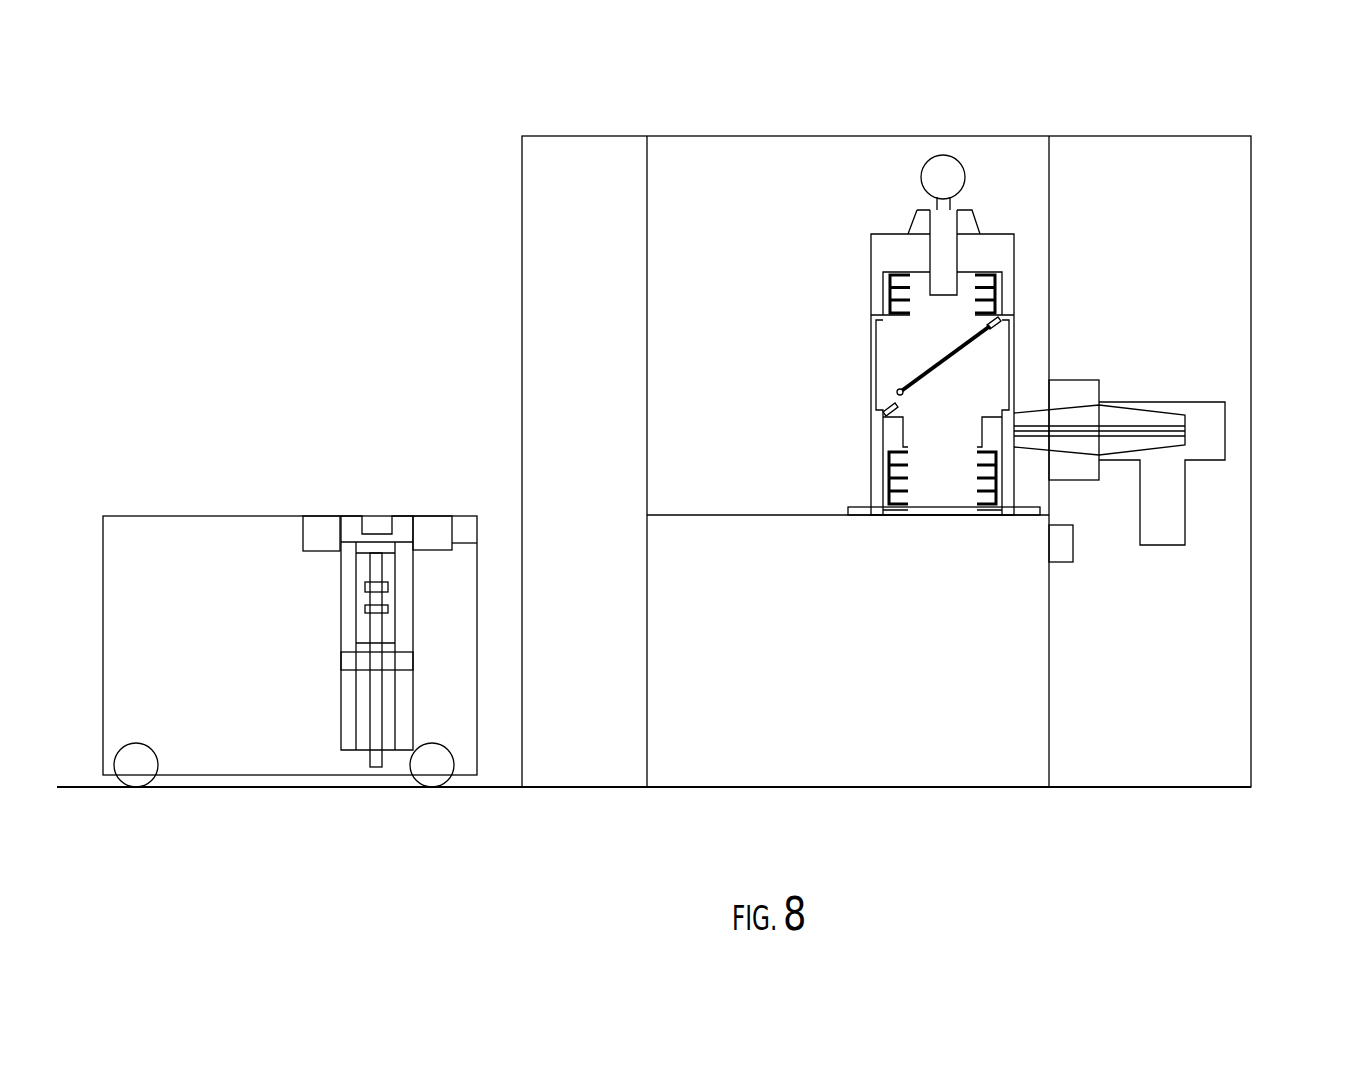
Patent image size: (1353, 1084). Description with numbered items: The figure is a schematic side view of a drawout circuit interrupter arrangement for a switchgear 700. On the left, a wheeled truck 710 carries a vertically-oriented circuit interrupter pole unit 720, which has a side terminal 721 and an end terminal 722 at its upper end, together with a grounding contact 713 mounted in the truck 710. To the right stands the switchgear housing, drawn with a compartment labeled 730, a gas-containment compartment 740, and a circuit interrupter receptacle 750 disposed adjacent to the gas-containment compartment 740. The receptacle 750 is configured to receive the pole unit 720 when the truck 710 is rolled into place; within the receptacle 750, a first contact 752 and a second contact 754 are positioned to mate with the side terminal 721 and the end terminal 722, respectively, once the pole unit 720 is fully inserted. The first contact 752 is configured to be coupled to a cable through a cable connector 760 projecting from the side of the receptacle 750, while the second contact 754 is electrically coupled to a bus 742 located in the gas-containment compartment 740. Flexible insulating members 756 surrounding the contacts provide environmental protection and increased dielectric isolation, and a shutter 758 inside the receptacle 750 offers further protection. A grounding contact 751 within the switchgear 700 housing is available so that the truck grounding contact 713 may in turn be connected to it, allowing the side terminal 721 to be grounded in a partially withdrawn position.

The switchgear 700 is at (1316, 145).
The truck 710 is at (237, 517).
The grounding contact 713 is at (317, 540).
The circuit interrupter pole unit 720 is at (345, 633).
The side terminal 721 is at (418, 663).
The end terminal 722 is at (403, 517).
The processing station housing 730 is at (1143, 137).
The gas-containment compartment 740 is at (1007, 155).
The bus 742 is at (958, 179).
The circuit interrupter receptacle 750 is at (890, 370).
The grounding contact 751 is at (1073, 543).
The first contact 752 is at (898, 428).
The second contact 754 is at (943, 290).
The flexible insulating members 756 is at (897, 298).
The shutter 758 is at (933, 373).
The cable connector 760 is at (1077, 418).